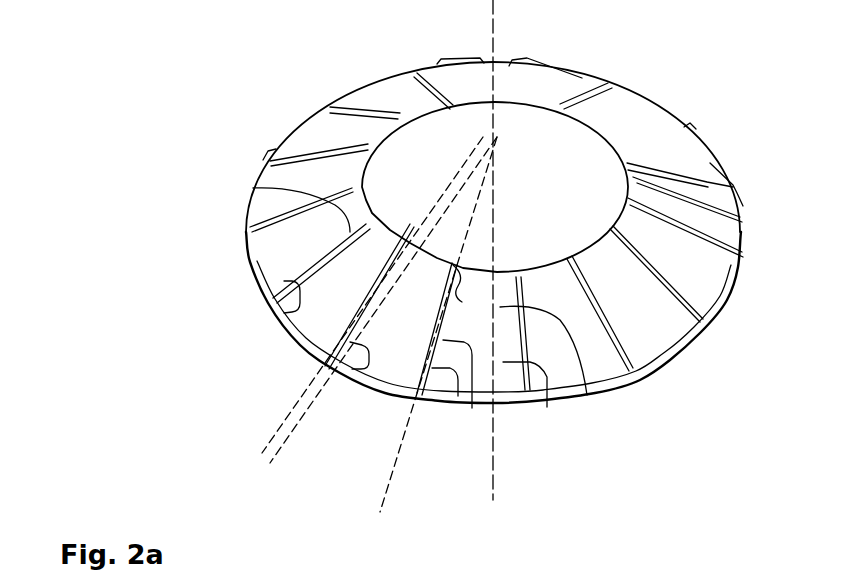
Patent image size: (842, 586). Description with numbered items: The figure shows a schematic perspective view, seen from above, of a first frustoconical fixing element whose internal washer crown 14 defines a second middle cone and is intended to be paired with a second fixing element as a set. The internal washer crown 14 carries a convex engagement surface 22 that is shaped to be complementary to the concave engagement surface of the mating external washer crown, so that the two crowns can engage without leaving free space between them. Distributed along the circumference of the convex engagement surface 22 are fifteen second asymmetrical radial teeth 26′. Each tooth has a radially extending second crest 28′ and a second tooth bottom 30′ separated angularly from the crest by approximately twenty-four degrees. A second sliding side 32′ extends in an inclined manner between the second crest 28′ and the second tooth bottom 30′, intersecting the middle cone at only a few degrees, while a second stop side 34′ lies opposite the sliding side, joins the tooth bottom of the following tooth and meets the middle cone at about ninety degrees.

The internal washer crown 14 is at (686, 350).
The convex engagement surface 22 is at (550, 382).
The second asymmetrical radial teeth 26′ is at (490, 279).
The second crest 28′ is at (438, 63).
The second tooth bottom 30′ is at (355, 382).
The second sliding side 32′ is at (583, 385).
The second stop side 34′ is at (290, 317).